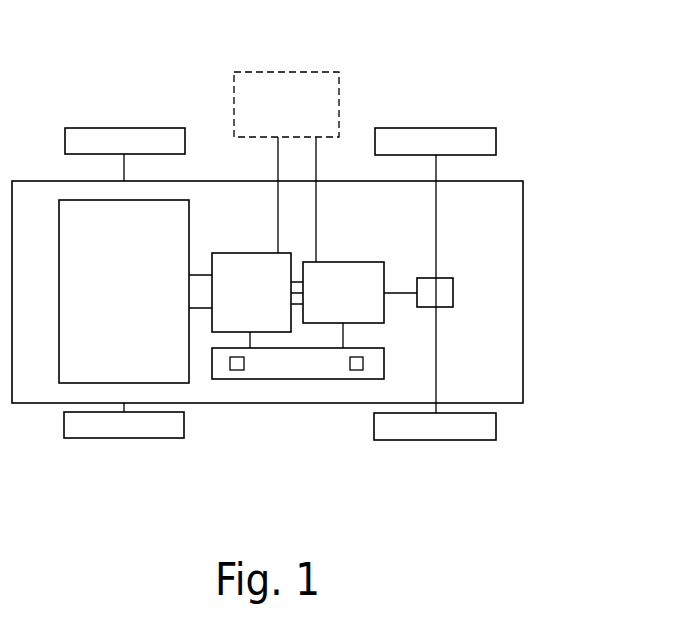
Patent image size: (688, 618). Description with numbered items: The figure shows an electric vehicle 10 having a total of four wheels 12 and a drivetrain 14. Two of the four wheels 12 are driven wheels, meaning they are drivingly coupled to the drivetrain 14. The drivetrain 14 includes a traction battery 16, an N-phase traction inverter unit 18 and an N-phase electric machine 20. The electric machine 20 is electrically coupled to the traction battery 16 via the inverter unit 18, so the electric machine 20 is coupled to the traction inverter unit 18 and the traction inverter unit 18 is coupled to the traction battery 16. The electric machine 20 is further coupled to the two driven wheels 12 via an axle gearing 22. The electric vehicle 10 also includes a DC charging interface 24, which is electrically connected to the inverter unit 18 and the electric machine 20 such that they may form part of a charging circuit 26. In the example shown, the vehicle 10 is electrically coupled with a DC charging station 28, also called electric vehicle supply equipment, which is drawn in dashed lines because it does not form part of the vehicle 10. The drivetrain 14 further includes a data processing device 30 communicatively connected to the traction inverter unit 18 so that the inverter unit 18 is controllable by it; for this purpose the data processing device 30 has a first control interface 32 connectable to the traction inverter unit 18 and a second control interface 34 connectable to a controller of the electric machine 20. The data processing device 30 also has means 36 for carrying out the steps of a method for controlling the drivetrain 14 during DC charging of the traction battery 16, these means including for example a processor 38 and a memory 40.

The electric vehicle 10 is at (433, 95).
The wheels 12 is at (98, 135).
The drivetrain 14 is at (465, 250).
The traction battery 16 is at (135, 291).
The N-phase traction inverter unit 18 is at (257, 300).
The N-phase electric machine 20 is at (360, 305).
The axle gearing 22 is at (442, 292).
The DC charging interface 24 is at (263, 168).
The charging circuit 26 is at (320, 210).
The DC charging station 28 is at (286, 104).
The data processing device 30 is at (398, 425).
The first control interface 32 is at (213, 343).
The second control interface 34 is at (360, 346).
The means for carrying out the steps of a method 36 is at (316, 442).
The processor 38 is at (237, 371).
The memory 40 is at (357, 372).